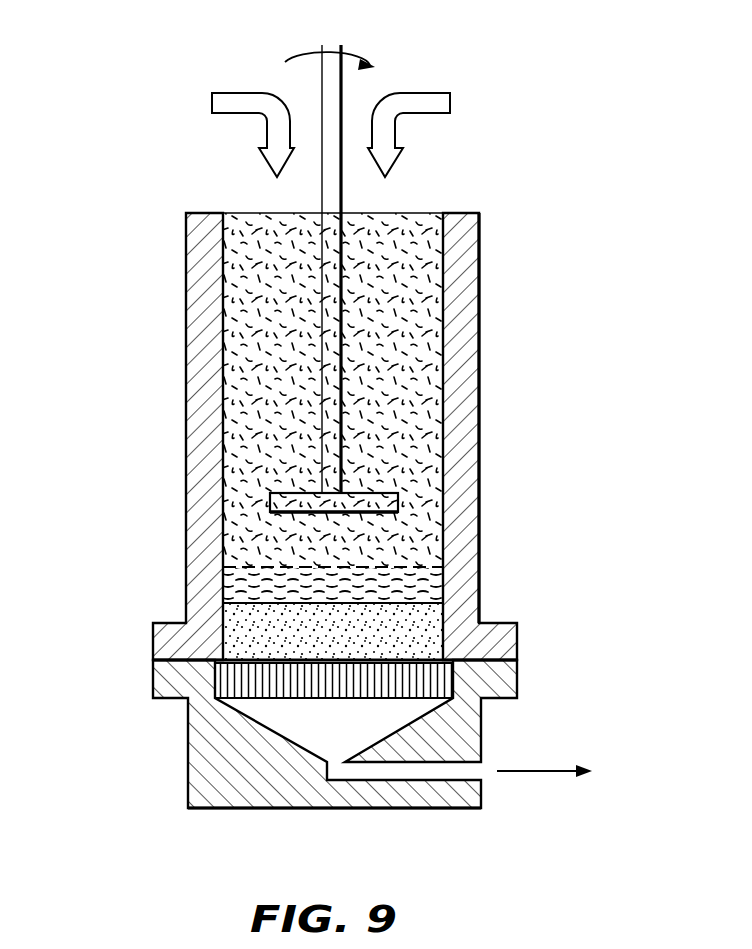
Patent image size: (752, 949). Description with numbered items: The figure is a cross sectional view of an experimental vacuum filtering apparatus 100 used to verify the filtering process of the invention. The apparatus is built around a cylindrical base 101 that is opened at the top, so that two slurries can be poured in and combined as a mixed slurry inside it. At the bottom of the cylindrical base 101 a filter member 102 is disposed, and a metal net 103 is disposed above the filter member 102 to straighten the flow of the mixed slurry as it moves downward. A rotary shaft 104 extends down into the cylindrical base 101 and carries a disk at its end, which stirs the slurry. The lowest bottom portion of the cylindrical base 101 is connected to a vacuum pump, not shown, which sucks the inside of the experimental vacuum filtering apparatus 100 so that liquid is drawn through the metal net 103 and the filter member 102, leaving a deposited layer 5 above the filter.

The experimental vacuum filtering apparatus 100 is at (334, 413).
The cylindrical base 101 is at (474, 443).
The filter member 102 is at (266, 688).
The metal net 103 is at (410, 567).
The rotary shaft 104 is at (333, 60).
The formed layer 5 is at (240, 628).